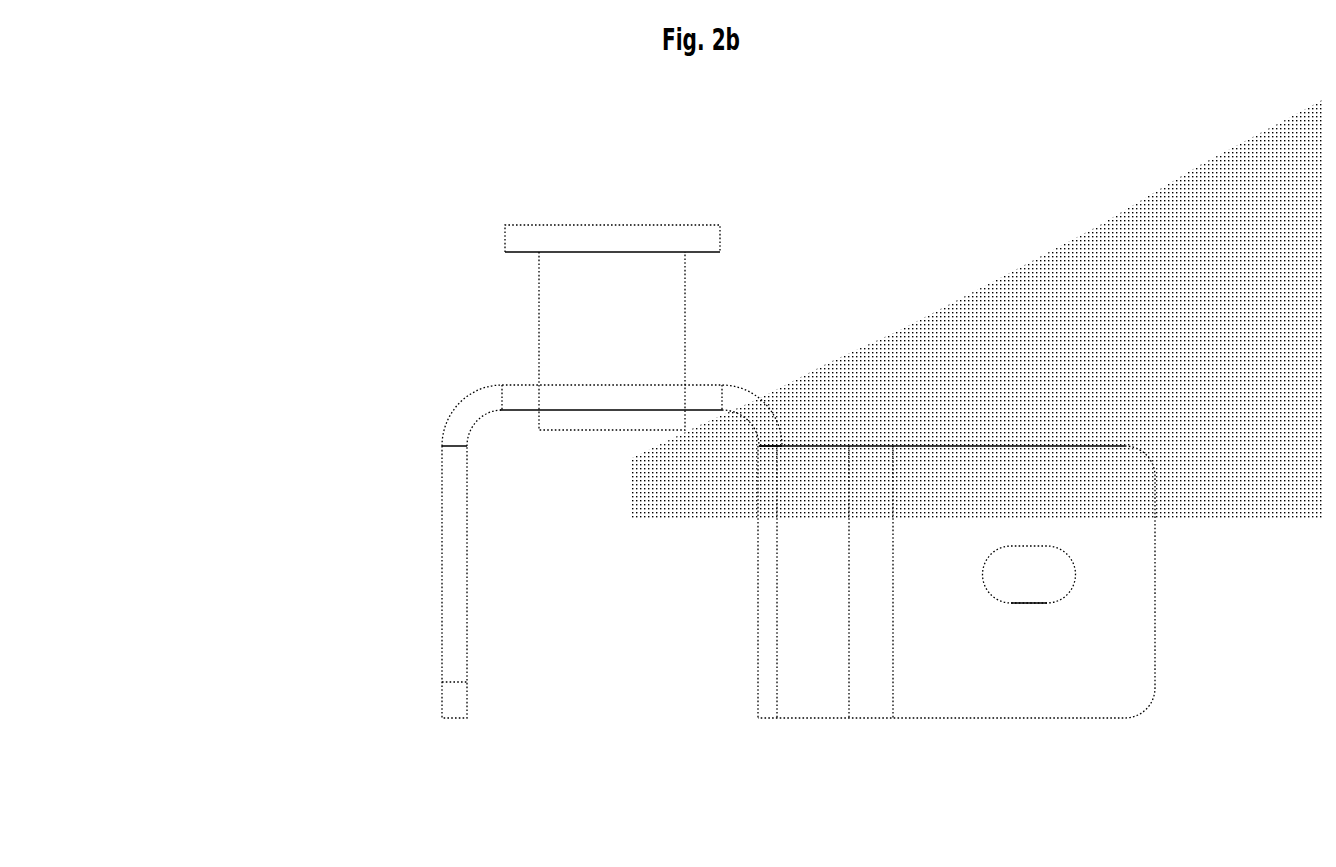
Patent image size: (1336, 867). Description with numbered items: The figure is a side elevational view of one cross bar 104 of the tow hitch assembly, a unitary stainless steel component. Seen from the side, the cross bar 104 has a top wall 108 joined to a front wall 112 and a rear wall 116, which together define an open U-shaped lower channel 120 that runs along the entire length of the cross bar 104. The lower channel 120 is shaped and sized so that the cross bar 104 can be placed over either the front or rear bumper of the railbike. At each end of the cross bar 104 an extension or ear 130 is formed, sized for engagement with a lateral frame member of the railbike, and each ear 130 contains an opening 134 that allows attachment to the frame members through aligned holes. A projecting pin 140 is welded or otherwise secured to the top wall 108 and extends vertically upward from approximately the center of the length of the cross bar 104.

The cross bar 104 is at (388, 352).
The top wall 108 is at (772, 408).
The front wall 112 is at (442, 637).
The rear wall 116 is at (758, 630).
The lower channel 120 is at (627, 663).
The ear 130 is at (1127, 447).
The opening 134 is at (1073, 568).
The projecting pin 140 is at (627, 226).